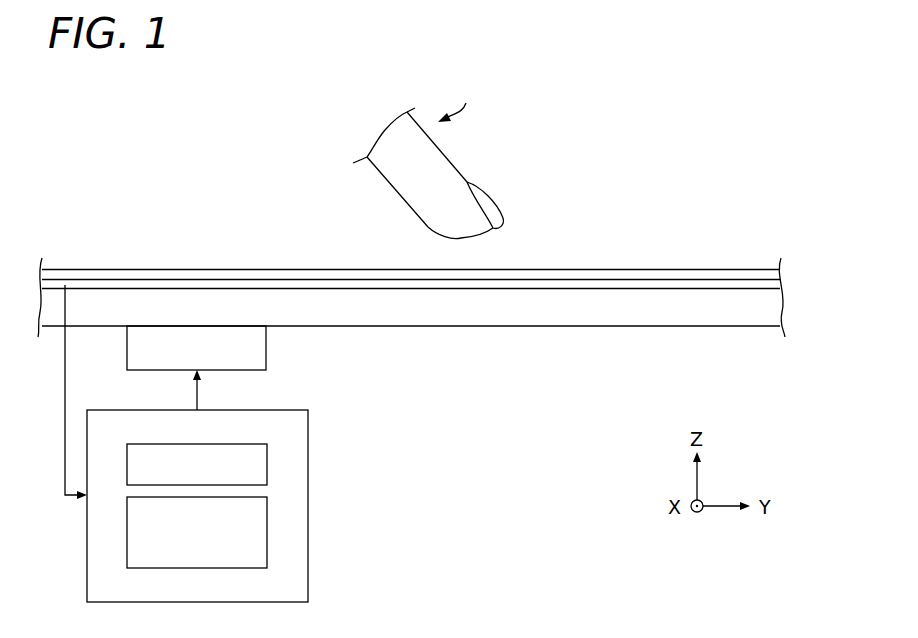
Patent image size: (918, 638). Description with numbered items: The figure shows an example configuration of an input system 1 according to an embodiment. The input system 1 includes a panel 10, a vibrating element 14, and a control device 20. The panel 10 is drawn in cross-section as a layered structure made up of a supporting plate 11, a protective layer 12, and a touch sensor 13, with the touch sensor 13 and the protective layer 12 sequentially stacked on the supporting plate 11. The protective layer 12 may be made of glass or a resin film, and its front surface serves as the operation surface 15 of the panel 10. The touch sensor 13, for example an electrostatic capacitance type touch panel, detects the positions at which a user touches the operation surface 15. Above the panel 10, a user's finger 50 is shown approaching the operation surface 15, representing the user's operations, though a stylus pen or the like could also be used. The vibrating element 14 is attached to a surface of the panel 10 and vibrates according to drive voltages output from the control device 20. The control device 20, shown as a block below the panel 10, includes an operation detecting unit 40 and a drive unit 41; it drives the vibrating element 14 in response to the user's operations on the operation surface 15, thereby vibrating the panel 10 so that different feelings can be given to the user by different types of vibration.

The input system 1 is at (748, 215).
The panel 10 is at (651, 372).
The supporting plate 11 is at (637, 297).
The protective layer 12 is at (567, 273).
The touch sensor 13 is at (602, 282).
The vibrating element 14 is at (267, 360).
The operation surface 15 is at (655, 268).
The control device 20 is at (308, 450).
The operation detecting unit 40 is at (267, 522).
The drive unit 41 is at (267, 473).
The finger 50 is at (466, 167).